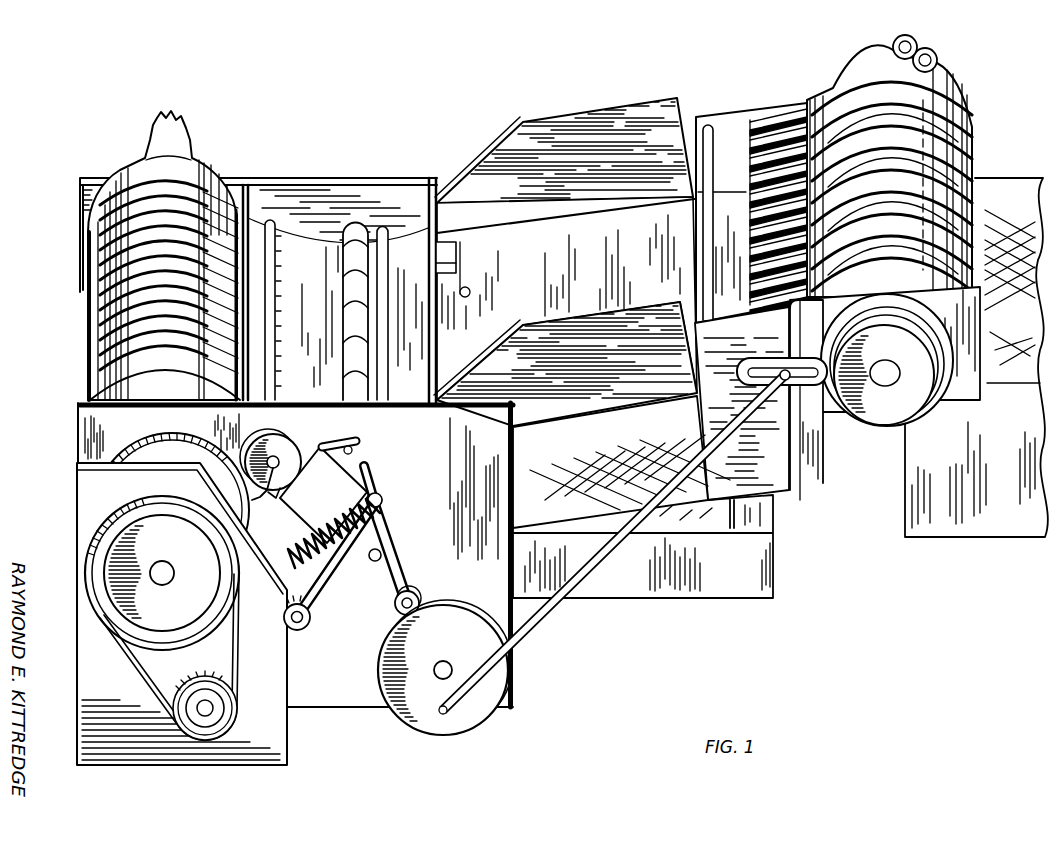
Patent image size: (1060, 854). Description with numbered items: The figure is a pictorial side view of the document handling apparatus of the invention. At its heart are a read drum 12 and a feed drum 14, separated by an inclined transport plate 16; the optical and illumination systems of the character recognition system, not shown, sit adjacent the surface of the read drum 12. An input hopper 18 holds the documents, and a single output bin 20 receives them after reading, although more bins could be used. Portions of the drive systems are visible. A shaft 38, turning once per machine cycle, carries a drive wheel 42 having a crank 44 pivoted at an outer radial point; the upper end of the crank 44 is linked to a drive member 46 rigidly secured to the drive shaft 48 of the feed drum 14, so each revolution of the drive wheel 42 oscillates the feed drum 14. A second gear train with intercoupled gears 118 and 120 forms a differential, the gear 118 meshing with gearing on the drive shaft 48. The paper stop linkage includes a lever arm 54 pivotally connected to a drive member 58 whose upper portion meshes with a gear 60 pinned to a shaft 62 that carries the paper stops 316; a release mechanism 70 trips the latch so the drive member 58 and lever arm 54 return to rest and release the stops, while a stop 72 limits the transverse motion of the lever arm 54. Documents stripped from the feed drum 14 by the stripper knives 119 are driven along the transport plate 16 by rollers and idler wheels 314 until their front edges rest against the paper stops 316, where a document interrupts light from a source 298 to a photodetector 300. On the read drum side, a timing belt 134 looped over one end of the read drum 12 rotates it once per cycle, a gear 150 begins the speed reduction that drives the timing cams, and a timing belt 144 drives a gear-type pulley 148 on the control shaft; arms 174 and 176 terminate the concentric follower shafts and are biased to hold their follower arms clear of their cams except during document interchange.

The read drum 12 is at (176, 395).
The feed drum 14 is at (950, 96).
The inclined transport plate 16 is at (633, 248).
The input hopper 18 is at (1010, 492).
The output bin 20 is at (752, 590).
The shaft 38 is at (455, 657).
The drive wheel 42 is at (476, 727).
The crank 44 is at (608, 557).
The drive member 46 is at (748, 383).
The drive shaft 48 is at (893, 378).
The lever arm 54 is at (376, 612).
The drive member 58 is at (325, 500).
The gear 60 is at (283, 437).
The shaft 62 is at (259, 489).
The release mechanism 70 is at (360, 441).
The stop 72 is at (412, 590).
The gear 118 is at (917, 45).
The stripper knives 119 is at (757, 114).
The gear 120 is at (938, 60).
The timing belt 134 is at (182, 168).
The timing belt 144 is at (150, 665).
The gear-type pulley 148 is at (160, 569).
The gear 150 is at (182, 612).
The arm 174 is at (377, 484).
The arm 176 is at (334, 543).
The light source 298 is at (447, 249).
The photodetector 300 is at (463, 297).
The idler wheels 314 is at (356, 232).
The paper stops 316 is at (297, 216).